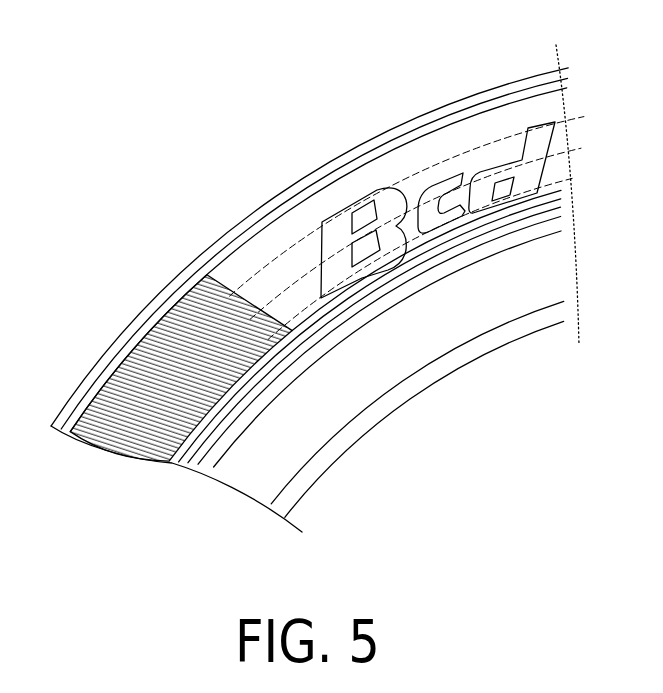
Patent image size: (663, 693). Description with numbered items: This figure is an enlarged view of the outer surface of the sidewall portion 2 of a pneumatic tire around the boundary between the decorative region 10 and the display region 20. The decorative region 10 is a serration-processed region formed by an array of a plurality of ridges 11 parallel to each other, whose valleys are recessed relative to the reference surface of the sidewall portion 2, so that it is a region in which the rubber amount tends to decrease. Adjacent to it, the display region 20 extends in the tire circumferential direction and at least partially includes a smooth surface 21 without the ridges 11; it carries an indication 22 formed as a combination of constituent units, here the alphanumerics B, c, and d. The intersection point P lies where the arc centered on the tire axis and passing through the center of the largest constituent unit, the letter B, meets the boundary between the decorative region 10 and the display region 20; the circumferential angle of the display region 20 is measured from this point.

The sidewall portion 2 is at (138, 211).
The decorative region 10 is at (126, 362).
The ridges 11 is at (97, 411).
The display region 20 is at (416, 137).
The smooth surface 21 is at (480, 127).
The indication 22 is at (342, 220).
The intersection point P is at (267, 303).